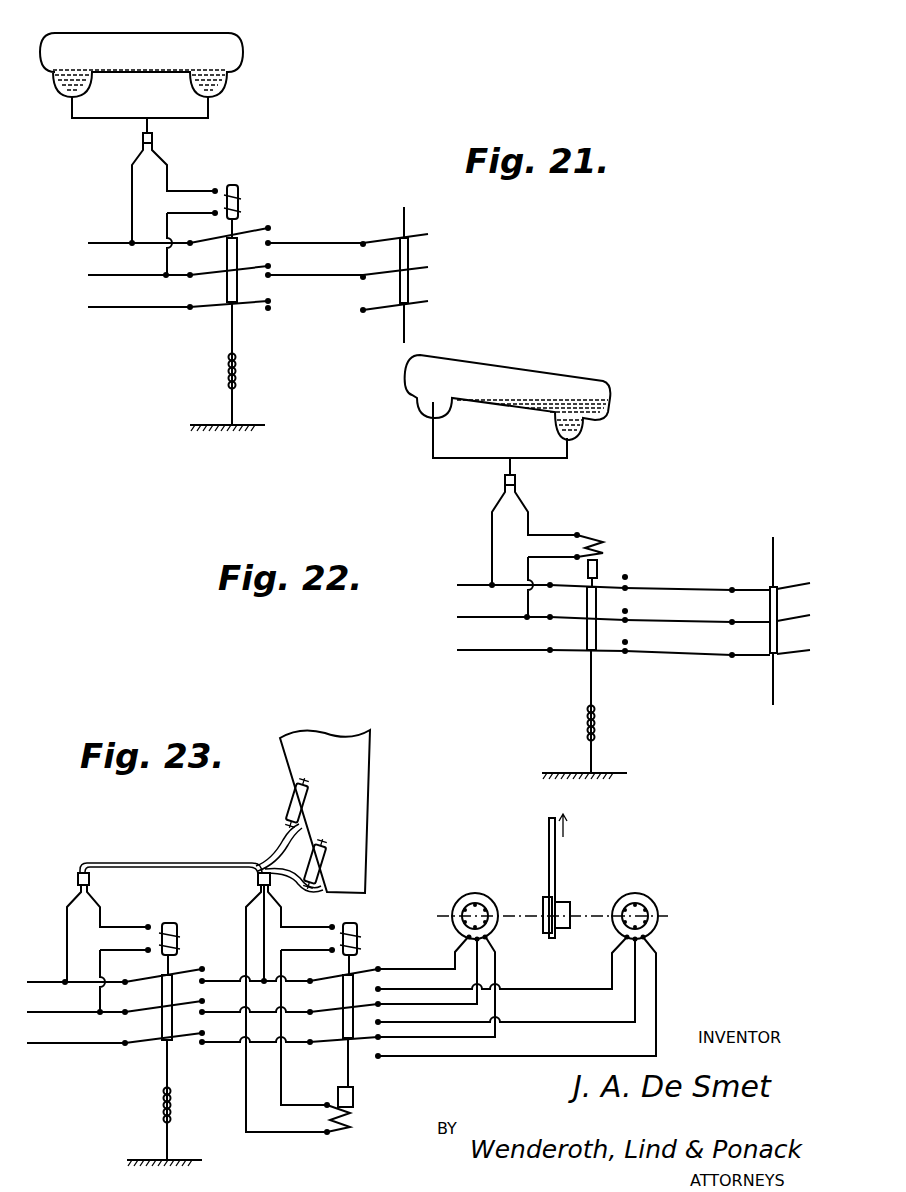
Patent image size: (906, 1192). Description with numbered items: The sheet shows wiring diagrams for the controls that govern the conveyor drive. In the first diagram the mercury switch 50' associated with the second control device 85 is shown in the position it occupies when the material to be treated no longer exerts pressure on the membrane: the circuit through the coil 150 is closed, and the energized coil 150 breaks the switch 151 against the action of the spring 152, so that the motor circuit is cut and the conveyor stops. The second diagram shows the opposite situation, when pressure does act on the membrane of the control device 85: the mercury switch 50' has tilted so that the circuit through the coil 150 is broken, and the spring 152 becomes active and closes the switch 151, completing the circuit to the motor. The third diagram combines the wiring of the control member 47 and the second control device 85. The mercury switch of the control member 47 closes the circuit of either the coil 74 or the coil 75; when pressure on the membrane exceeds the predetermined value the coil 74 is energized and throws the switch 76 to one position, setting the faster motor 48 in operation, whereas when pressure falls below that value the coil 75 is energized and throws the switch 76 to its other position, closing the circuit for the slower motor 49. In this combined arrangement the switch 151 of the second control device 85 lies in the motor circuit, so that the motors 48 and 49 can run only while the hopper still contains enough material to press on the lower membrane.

In FIG. 21, the mercury switch 50' is at (141, 75).
In FIG. 22, the mercury switch 50' is at (508, 411).
In FIG. 21, the coil 150 is at (239, 201).
In FIG. 22, the coil 150 is at (603, 540).
In FIG. 23, the coil 150 is at (178, 932).
In FIG. 21, the switch 151 is at (245, 307).
In FIG. 22, the switch 151 is at (613, 652).
In FIG. 23, the switch 151 is at (182, 1043).
In FIG. 21, the spring 152 is at (236, 386).
In FIG. 22, the spring 152 is at (595, 731).
In FIG. 23, the spring 152 is at (171, 1118).
In FIG. 21, the switch 76 is at (409, 305).
In FIG. 22, the switch 76 is at (778, 656).
In FIG. 23, the switch 76 is at (355, 1040).
In FIG. 23, the control member 47 is at (304, 801).
In FIG. 23, the second control device 85 is at (322, 858).
In FIG. 23, the coil 74 is at (358, 935).
In FIG. 23, the coil 75 is at (352, 1124).
In FIG. 23, the motor 48 is at (482, 903).
In FIG. 23, the motor 49 is at (656, 912).